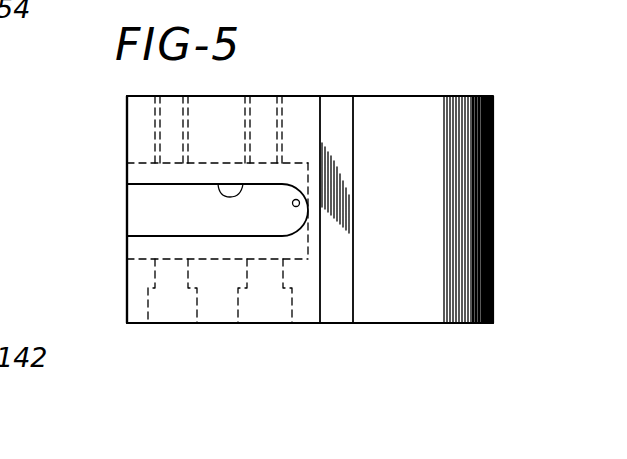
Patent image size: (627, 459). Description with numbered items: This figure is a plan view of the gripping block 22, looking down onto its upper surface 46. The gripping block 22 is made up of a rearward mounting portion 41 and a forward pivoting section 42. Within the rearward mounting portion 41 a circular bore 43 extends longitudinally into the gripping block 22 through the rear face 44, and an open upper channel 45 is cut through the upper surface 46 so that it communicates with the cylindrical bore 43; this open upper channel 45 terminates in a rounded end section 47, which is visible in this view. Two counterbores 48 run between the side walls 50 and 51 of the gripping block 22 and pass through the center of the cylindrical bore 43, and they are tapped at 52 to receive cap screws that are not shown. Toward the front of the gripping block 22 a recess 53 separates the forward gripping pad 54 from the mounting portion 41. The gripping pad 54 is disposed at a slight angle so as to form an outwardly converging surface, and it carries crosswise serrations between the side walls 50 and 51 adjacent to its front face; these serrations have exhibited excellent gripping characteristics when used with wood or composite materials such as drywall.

The gripping block 22 is at (380, 78).
The rearward mounting portion 41 is at (135, 323).
The forward pivoting section 42 is at (462, 323).
The circular bore 43 is at (210, 165).
The rear face 44 is at (127, 275).
The open upper channel 45 is at (238, 190).
The upper surface 46 is at (235, 147).
The rounded end section 47 is at (300, 206).
The counterbores 48 is at (268, 312).
The side wall 50 is at (333, 323).
The side wall 51 is at (402, 97).
The tapped portion 52 is at (138, 122).
The recess 53 is at (423, 242).
The gripping pad 54 is at (493, 152).